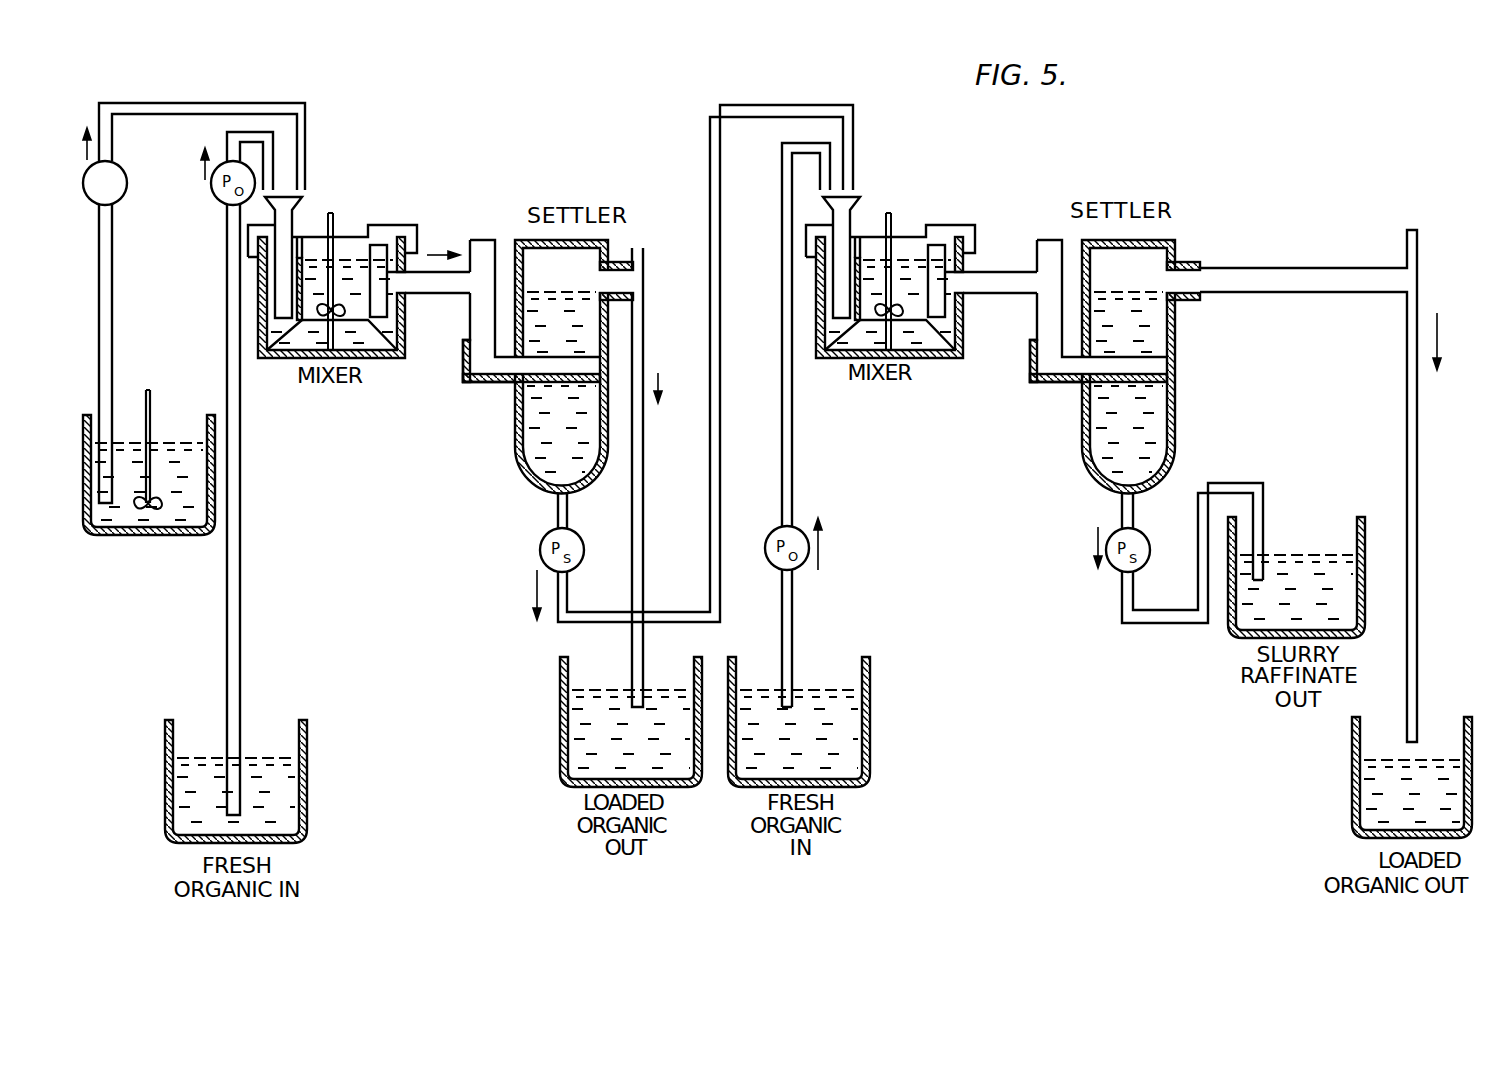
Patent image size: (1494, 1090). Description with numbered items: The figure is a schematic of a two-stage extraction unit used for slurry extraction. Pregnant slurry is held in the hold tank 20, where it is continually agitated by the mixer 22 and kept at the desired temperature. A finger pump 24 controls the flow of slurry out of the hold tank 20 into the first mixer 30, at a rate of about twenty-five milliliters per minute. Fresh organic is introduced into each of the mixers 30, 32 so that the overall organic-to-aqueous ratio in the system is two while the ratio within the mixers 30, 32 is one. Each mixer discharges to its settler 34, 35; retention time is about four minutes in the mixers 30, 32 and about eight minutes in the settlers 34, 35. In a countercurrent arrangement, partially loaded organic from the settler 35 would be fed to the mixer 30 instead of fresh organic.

The hold tank 20 is at (206, 539).
The mixer 22 is at (156, 406).
The finger pump 24 is at (121, 196).
The mixer 30 is at (272, 360).
The mixer 32 is at (828, 353).
The settler 34 is at (520, 473).
The settler 35 is at (1082, 455).